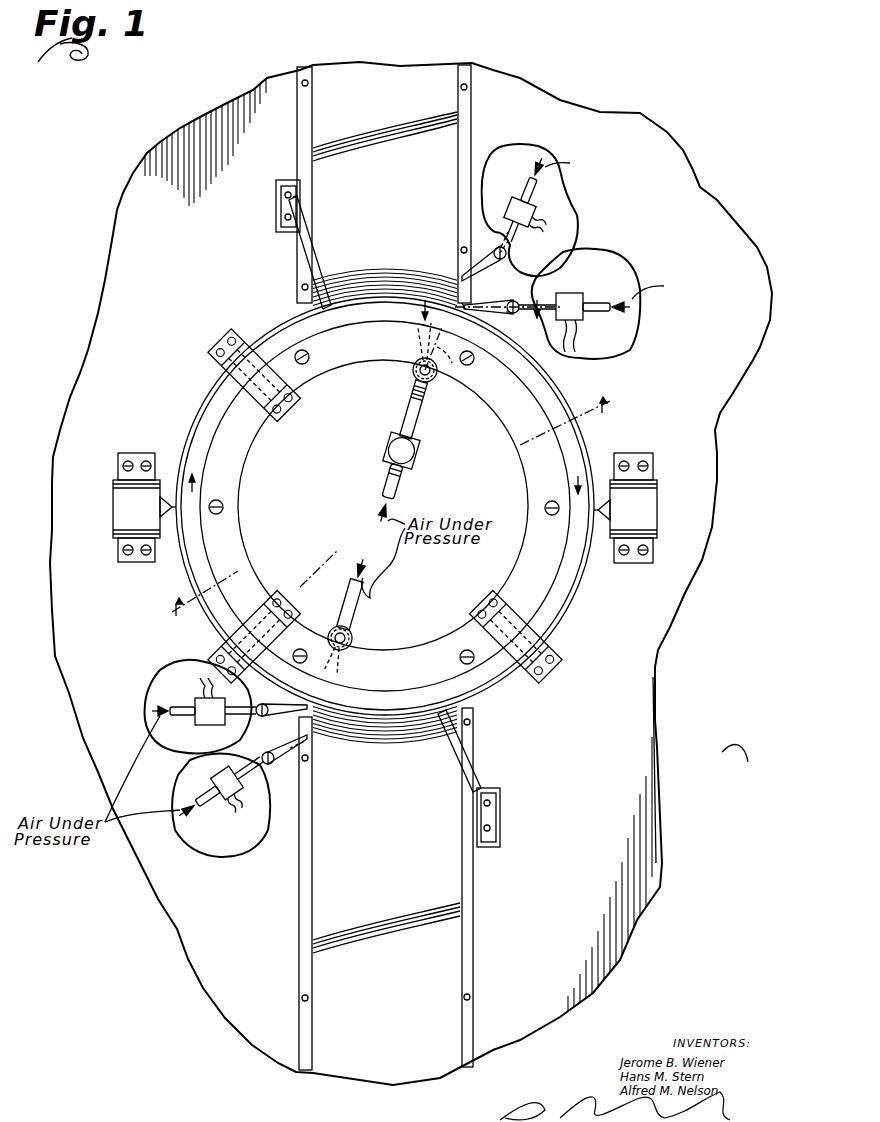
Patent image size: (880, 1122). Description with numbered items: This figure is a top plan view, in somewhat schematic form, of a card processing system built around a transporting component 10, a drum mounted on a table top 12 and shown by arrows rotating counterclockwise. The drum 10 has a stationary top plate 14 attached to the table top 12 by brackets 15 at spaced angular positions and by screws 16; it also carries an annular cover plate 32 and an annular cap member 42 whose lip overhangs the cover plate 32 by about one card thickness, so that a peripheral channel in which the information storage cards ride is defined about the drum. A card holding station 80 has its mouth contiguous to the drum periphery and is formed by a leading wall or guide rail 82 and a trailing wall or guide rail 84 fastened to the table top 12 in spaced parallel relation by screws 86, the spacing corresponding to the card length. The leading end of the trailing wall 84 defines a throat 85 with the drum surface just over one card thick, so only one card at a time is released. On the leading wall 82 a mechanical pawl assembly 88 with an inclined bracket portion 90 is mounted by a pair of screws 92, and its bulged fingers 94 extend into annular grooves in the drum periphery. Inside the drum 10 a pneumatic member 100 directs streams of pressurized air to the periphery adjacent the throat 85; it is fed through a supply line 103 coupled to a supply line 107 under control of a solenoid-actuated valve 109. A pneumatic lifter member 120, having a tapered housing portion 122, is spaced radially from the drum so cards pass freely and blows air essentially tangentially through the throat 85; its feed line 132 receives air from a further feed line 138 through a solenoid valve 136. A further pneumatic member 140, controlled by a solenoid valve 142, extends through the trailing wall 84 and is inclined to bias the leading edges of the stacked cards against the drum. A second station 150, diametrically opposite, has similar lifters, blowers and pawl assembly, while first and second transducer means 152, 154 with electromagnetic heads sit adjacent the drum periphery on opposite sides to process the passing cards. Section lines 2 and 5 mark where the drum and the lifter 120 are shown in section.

The section line 2- 2 is at (388, 510).
The section line 5- 5 is at (483, 319).
The transporting component 10 is at (578, 394).
The table top 12 is at (152, 189).
The stationary top plate 14 is at (560, 572).
The brackets 15 is at (258, 412).
The screws 16 is at (218, 349).
The annular cover plate 32 is at (197, 414).
The annular cap member 42 is at (198, 429).
The card holding station 80 is at (418, 89).
The leading wall or guide rail 82 is at (298, 124).
The trailing wall or guide rail 84 is at (470, 139).
The throat 85 is at (462, 311).
The screws 86 is at (302, 84).
The mechanical pawl assembly 88 is at (317, 261).
The inclined bracket portion 90 is at (308, 227).
The screws 92 is at (285, 217).
The bulged fingers 94 is at (325, 309).
The pneumatic member 100 is at (433, 373).
The supply line 103 is at (400, 484).
The supply line 107 is at (420, 415).
The solenoid-actuated valve 109 is at (391, 446).
The pneumatic lifter member 120 is at (508, 317).
The housing portion 122 is at (500, 302).
The feed line 132 is at (553, 354).
The solenoid valve 136 is at (570, 298).
The feed line 138 is at (600, 303).
The pneumatic member 140 is at (490, 257).
The solenoid valve 142 is at (515, 205).
The second station 150 is at (350, 1034).
The first transducer means 152 is at (632, 493).
The second transducer means 154 is at (116, 494).